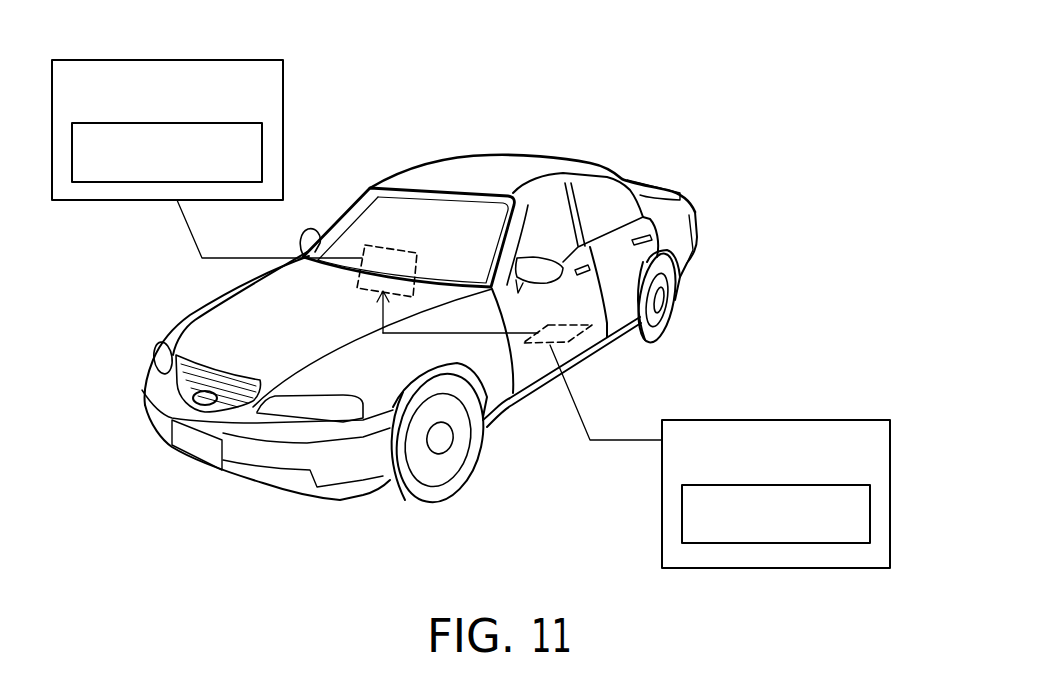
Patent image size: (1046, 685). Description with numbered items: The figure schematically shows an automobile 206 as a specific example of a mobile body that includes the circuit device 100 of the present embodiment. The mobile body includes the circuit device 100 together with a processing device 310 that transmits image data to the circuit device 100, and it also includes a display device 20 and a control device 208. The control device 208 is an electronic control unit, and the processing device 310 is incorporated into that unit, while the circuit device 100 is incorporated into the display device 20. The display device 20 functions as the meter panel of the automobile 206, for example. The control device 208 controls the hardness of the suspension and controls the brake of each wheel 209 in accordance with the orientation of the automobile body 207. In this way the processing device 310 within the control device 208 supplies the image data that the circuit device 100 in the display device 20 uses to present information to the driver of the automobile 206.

The display device 20 is at (173, 57).
The circuit device 100 is at (263, 152).
The automobile 206 is at (169, 300).
The automobile body 207 is at (552, 151).
The control device 208 is at (813, 420).
The wheel 209 is at (432, 500).
The processing device 310 is at (870, 508).